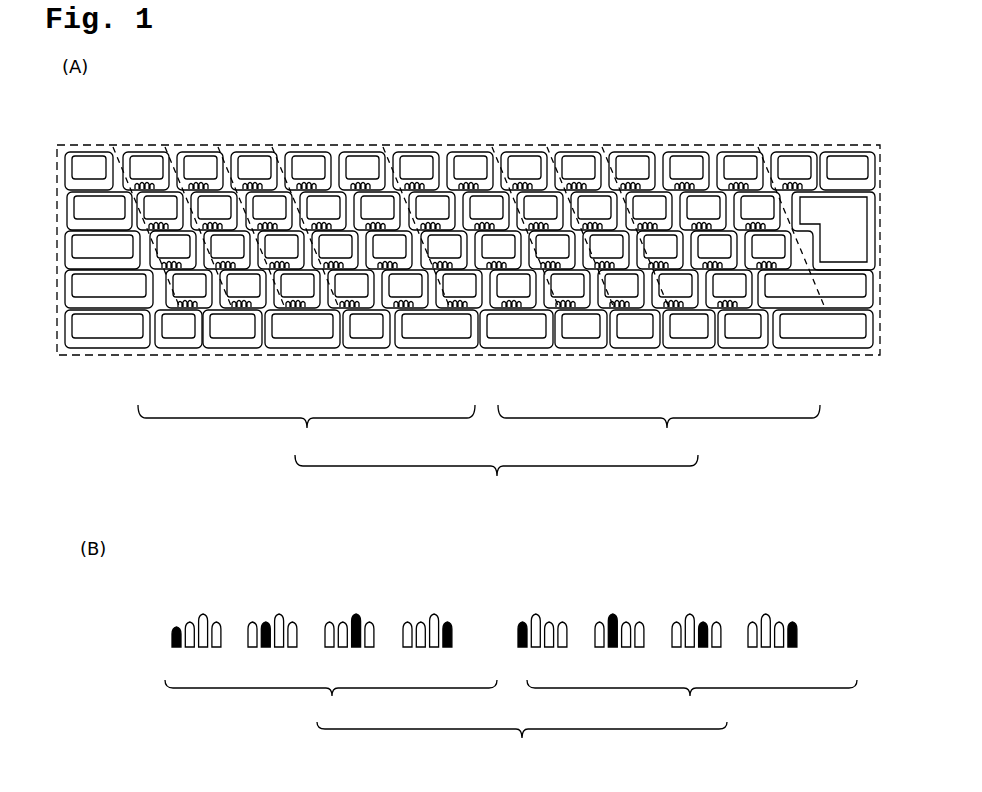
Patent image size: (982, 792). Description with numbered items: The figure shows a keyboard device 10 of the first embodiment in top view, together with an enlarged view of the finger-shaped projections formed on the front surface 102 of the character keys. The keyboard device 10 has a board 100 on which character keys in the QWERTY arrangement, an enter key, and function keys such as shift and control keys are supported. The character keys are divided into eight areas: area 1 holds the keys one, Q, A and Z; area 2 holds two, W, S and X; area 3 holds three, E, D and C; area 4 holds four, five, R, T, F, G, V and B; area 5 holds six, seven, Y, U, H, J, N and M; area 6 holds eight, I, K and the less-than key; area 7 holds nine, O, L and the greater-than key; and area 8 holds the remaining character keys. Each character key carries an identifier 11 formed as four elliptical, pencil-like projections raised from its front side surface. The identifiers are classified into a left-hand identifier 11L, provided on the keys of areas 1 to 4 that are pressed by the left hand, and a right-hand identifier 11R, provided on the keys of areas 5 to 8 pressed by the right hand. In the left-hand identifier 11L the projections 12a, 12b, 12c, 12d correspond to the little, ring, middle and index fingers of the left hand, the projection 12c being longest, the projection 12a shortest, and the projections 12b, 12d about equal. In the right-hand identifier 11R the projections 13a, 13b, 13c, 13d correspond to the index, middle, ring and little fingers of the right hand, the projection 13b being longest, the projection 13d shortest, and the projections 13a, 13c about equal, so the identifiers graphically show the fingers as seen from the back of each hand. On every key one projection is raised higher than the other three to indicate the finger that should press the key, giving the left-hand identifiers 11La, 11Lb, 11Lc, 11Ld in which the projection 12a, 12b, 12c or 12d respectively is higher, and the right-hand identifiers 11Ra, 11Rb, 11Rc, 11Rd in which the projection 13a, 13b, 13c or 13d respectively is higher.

The keyboard device 10 is at (828, 111).
The board 100 is at (105, 356).
The front surface 102 is at (452, 348).
The area 1 is at (162, 145).
The area 2 is at (215, 145).
The area 3 is at (268, 145).
The area 4 is at (380, 145).
The area 5 is at (490, 145).
The area 6 is at (545, 145).
The area 7 is at (600, 145).
The area 8 is at (758, 145).
The identifier 11 is at (511, 613).
The left-hand identifier 11L is at (317, 563).
The right-hand identifier 11R is at (677, 563).
The left-hand identifier 11La is at (180, 308).
The left-hand identifier 11Lb is at (243, 308).
The left-hand identifier 11Lc is at (300, 308).
The left-hand identifier 11Ld is at (351, 308).
The right-hand identifier 11Ra is at (510, 308).
The right-hand identifier 11Rb is at (568, 308).
The right-hand identifier 11Rc is at (622, 308).
The right-hand identifier 11Rd is at (680, 313).
The projection 12a is at (176, 627).
The projection 12b is at (188, 620).
The projection 12c is at (202, 614).
The projection 12d is at (218, 622).
The projection 13a is at (522, 626).
The projection 13b is at (534, 614).
The projection 13c is at (548, 621).
The projection 13d is at (562, 622).